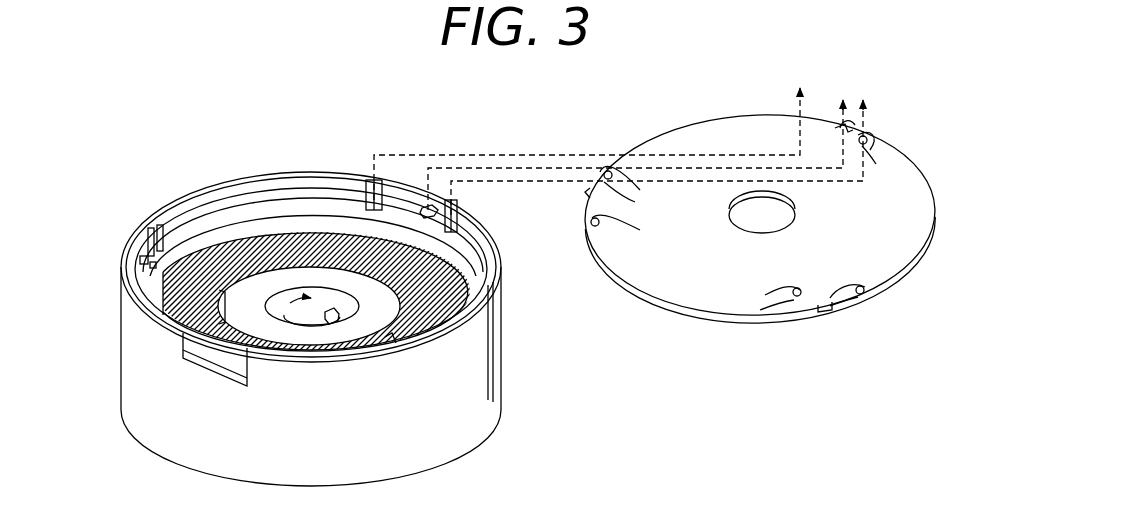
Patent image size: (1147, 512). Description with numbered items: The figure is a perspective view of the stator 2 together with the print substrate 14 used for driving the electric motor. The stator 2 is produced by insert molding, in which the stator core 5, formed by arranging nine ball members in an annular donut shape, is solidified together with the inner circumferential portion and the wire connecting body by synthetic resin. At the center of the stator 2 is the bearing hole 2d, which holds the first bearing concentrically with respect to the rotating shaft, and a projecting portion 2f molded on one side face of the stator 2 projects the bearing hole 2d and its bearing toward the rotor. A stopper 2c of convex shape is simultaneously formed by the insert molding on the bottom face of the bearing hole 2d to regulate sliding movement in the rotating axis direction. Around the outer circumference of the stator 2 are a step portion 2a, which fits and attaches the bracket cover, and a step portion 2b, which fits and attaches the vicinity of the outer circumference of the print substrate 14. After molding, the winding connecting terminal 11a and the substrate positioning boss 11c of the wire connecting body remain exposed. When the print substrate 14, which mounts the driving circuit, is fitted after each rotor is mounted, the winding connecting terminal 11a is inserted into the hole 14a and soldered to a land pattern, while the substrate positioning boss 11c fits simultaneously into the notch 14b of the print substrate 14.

The stator 2 is at (520, 403).
The step portion 2a is at (268, 172).
The step portion 2b is at (330, 202).
The stopper 2c is at (330, 325).
The bearing hole 2d is at (287, 316).
The projecting portion 2f is at (358, 325).
The stator core 5 is at (233, 232).
The winding connecting terminal 11a is at (163, 237).
The substrate positioning boss 11c is at (150, 250).
The print substrate 14 is at (748, 115).
The hole 14a is at (868, 138).
The notch 14b is at (855, 132).